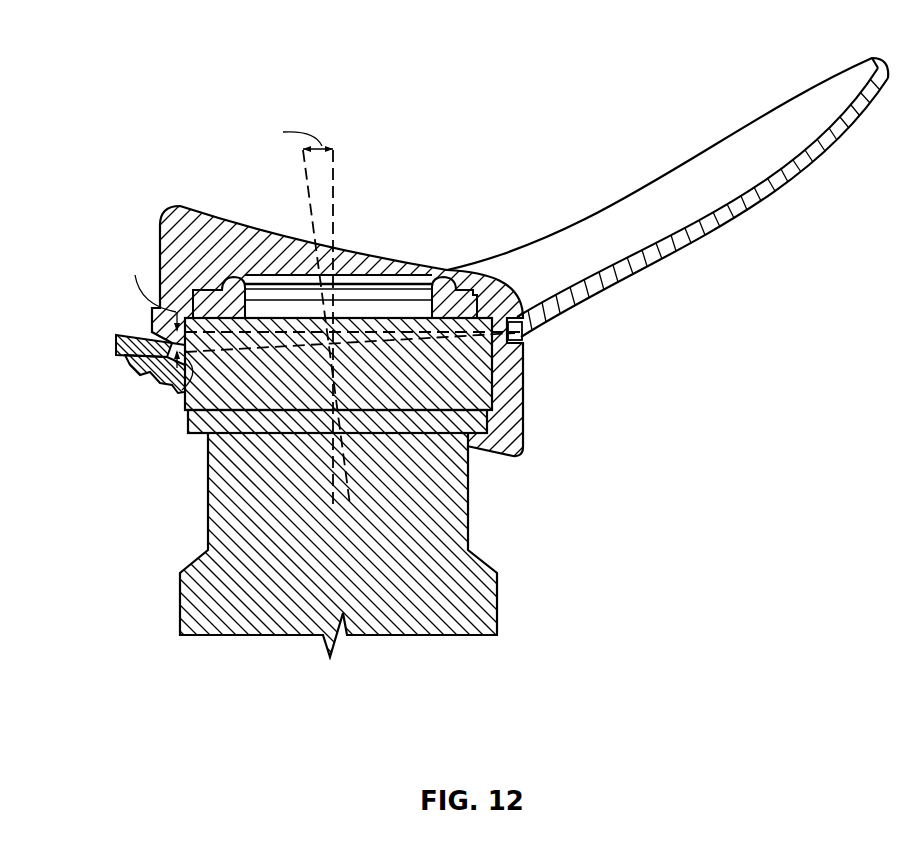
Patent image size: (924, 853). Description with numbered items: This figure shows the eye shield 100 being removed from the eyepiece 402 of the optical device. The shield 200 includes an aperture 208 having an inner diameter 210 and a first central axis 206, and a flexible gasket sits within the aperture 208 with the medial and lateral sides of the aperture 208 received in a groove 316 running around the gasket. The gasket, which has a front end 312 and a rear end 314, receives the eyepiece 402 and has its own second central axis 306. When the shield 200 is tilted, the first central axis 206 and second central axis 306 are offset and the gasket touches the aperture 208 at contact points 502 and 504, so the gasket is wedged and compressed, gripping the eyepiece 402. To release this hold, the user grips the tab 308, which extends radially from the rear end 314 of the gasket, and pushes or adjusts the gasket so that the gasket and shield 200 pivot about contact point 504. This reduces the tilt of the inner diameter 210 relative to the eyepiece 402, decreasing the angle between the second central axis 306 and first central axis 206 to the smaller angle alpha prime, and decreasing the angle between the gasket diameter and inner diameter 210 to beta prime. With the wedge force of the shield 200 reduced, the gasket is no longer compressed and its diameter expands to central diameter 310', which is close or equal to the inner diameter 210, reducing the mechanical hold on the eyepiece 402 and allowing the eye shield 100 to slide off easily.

The eye shield 100 is at (98, 52).
The shield 200 is at (700, 243).
The first central axis 206 is at (350, 497).
The aperture 208 is at (508, 338).
The inner diameter 210 is at (181, 388).
The second central axis 306 is at (333, 497).
The tab 308 is at (133, 360).
The central diameter 310' is at (350, 487).
The front end 312 is at (172, 205).
The rear end 314 is at (196, 432).
The groove 316 is at (520, 340).
The eyepiece 402 is at (267, 281).
The contact point 502 is at (170, 340).
The contact point 504 is at (518, 320).